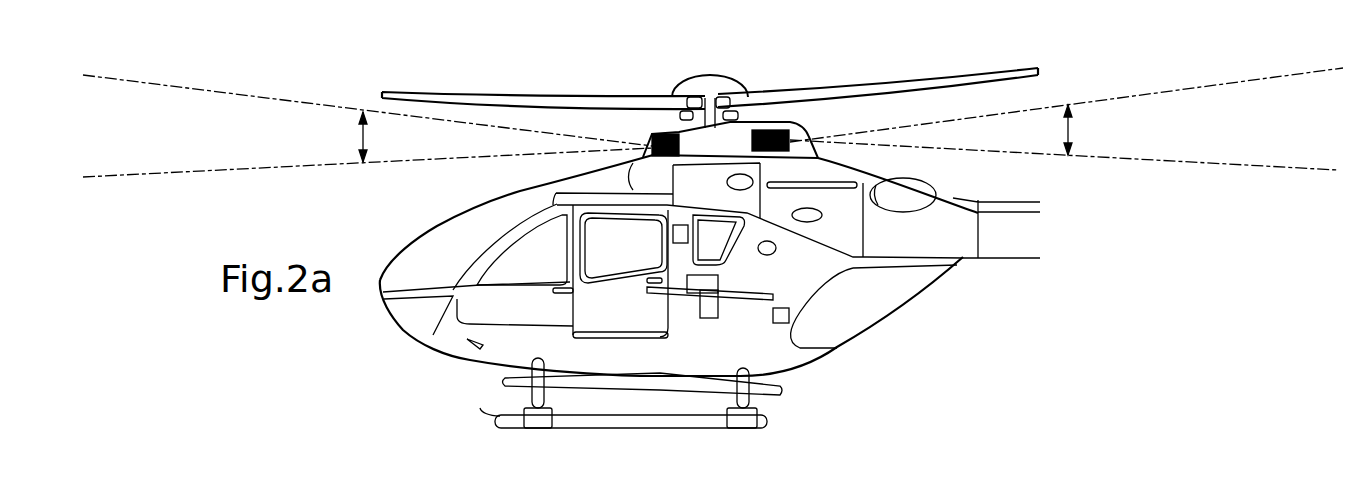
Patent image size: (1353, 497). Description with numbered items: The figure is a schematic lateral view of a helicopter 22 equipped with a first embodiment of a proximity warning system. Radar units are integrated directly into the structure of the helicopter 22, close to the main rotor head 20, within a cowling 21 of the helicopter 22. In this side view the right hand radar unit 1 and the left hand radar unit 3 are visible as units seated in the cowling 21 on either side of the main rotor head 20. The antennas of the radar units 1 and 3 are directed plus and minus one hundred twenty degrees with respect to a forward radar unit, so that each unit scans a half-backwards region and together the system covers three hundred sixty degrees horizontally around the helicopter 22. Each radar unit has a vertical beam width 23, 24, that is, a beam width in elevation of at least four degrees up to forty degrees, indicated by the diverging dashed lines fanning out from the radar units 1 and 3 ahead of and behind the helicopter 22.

The radar unit 1 is at (660, 134).
The radar unit 3 is at (794, 130).
The main rotor head 20 is at (712, 125).
The cowling 21 is at (741, 158).
The helicopter 22 is at (913, 335).
The vertical beam width 23 is at (363, 133).
The vertical beam width 24 is at (1072, 128).